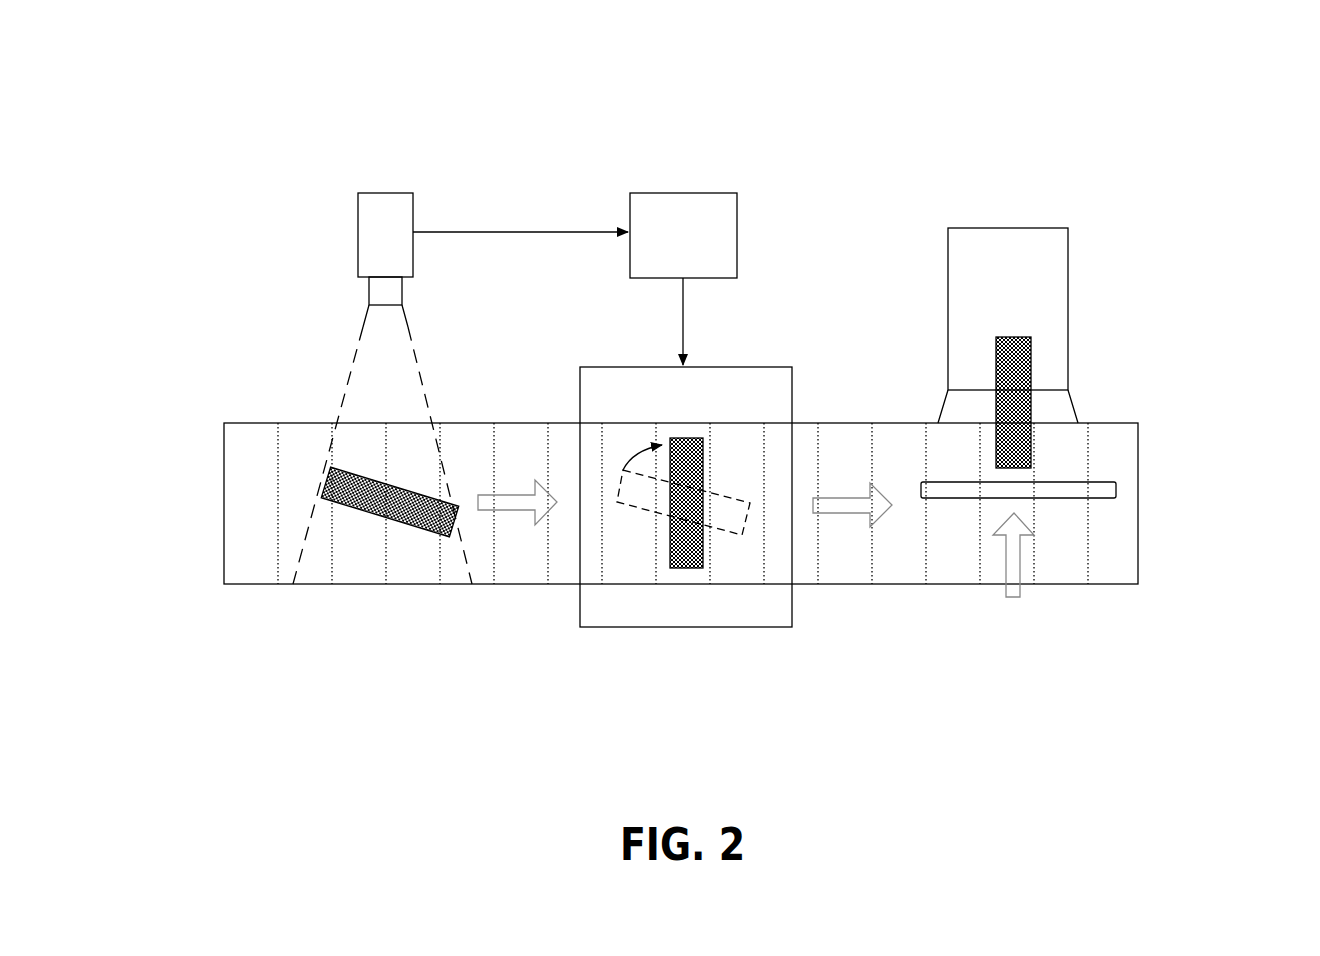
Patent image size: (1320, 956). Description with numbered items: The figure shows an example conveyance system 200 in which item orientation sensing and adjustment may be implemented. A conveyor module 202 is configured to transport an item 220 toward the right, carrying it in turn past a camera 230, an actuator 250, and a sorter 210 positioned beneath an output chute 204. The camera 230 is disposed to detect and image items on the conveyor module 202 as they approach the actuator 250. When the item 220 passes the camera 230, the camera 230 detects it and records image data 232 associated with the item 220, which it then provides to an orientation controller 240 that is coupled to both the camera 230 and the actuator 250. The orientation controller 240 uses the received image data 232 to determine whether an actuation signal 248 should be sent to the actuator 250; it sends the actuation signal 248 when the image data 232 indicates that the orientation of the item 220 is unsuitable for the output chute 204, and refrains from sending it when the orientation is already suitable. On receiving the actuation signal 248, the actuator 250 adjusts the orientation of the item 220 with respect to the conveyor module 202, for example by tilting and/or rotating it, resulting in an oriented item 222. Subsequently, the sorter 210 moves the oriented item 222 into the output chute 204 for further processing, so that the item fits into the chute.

The conveyance system 200 is at (1169, 86).
The conveyor module 202 is at (216, 554).
The output chute 204 is at (929, 216).
The sorter 210 is at (980, 626).
The item 220 is at (382, 530).
The oriented item 222 is at (895, 295).
The camera 230 is at (356, 228).
The image data 232 is at (538, 183).
The orientation controller 240 is at (742, 210).
The actuation signal 248 is at (669, 308).
The actuator 250 is at (661, 632).